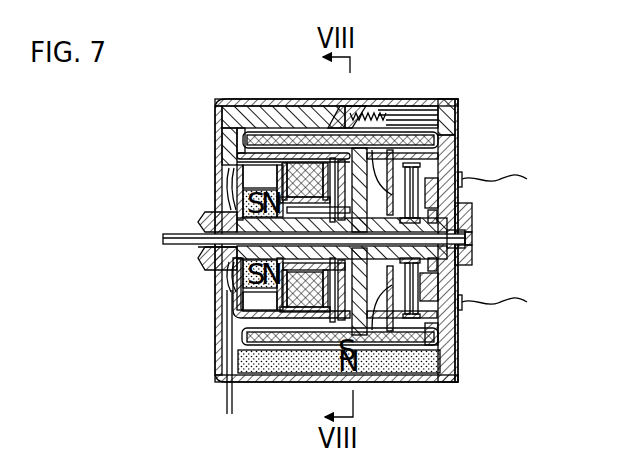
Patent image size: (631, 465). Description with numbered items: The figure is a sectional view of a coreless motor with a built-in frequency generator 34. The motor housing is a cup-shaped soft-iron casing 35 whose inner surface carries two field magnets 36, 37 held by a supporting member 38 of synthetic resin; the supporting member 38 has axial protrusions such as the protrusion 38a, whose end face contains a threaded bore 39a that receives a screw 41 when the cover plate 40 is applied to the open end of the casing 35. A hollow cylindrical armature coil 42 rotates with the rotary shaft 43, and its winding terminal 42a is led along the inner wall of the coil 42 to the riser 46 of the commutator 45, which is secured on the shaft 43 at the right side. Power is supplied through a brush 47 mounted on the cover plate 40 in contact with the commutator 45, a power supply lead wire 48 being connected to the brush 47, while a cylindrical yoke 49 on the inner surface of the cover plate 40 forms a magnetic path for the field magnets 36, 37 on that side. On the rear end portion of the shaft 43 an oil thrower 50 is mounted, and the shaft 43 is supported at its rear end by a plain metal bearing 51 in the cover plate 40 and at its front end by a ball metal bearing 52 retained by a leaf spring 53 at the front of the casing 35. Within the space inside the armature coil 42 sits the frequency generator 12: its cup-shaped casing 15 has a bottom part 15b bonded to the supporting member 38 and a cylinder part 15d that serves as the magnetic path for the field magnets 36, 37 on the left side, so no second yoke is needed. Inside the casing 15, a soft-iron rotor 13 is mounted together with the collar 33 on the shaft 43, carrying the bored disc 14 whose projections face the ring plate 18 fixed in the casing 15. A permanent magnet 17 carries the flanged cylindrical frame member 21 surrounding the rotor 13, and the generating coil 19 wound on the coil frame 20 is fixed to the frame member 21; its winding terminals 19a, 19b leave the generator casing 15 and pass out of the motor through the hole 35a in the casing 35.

The frequency generator 12 is at (254, 322).
The rotor 13 is at (309, 320).
The bored disc 14 is at (402, 272).
The casing 15 is at (236, 174).
The bottom part 15b is at (229, 192).
The cylinder part 15d is at (252, 150).
The permanent magnet 17 is at (232, 298).
The ring plate 18 is at (352, 322).
The generating coil 19 is at (316, 163).
The winding terminal 19a is at (226, 411).
The winding terminal 19b is at (233, 411).
The coil frame 20 is at (300, 134).
The flanged cylindrical frame member 21 is at (262, 153).
The collar 33 is at (207, 248).
The coreless motor with a built-in frequency generator 34 is at (410, 105).
The casing 35 is at (216, 101).
The hole 35a is at (214, 384).
The field magnet 36 is at (396, 106).
The field magnet 37 is at (422, 361).
The supporting member 38 is at (225, 128).
The protrusion 38a is at (312, 110).
The threaded bore 39a is at (345, 106).
The cover plate 40 is at (448, 133).
The screw 41 is at (420, 118).
The armature coil 42 is at (280, 340).
The winding terminal 42a is at (425, 165).
The rotary shaft 43 is at (165, 239).
The commutator 45 is at (455, 264).
The riser 46 is at (400, 281).
The brush 47 is at (458, 184).
The power supply lead wire 48 is at (524, 177).
The cylindrical yoke 49 is at (440, 331).
The shaft bushing 50 is at (465, 239).
The plain metal bearing 51 is at (470, 218).
The ball metal bearing 52 is at (207, 227).
The leaf spring 53 is at (228, 276).